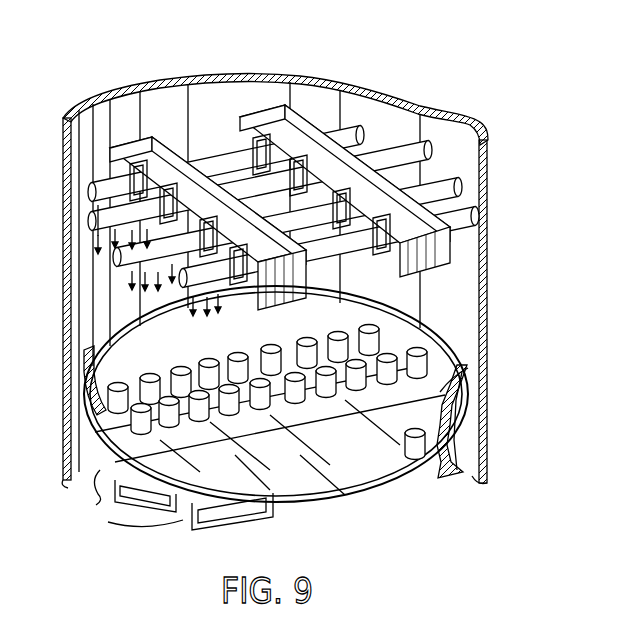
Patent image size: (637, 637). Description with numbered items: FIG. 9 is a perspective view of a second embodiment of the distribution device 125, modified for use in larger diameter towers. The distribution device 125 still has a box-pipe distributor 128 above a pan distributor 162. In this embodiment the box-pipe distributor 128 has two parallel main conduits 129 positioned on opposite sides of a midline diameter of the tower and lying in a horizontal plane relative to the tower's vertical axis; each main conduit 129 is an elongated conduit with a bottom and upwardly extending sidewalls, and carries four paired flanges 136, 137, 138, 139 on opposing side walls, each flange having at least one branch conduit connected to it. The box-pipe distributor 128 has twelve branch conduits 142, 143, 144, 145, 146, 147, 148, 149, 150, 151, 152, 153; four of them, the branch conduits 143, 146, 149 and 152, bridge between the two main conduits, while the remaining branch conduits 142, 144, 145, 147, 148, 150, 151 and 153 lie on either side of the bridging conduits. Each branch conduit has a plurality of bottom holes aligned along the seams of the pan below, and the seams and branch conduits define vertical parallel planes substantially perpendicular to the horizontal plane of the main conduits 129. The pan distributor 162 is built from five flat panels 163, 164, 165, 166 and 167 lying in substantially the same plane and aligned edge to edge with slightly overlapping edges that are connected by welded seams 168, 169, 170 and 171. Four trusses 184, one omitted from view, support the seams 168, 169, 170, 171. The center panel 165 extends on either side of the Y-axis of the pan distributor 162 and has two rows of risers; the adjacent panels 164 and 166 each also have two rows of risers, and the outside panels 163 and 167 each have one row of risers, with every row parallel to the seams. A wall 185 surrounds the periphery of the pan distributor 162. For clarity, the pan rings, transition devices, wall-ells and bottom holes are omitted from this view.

The distribution device 125 is at (339, 281).
The box-pipe distributor 128 is at (563, 342).
The main conduit 129 is at (275, 175).
The paired flange 136 is at (128, 158).
The paired flange 137 is at (163, 190).
The paired flange 138 is at (203, 219).
The paired flange 139 is at (241, 245).
The branch conduit 142 is at (88, 190).
The branch conduit 143 is at (197, 155).
The branch conduit 144 is at (362, 140).
The branch conduit 145 is at (90, 222).
The branch conduit 146 is at (204, 160).
The branch conduit 147 is at (428, 146).
The branch conduit 148 is at (132, 286).
The branch conduit 149 is at (333, 248).
The branch conduit 150 is at (463, 188).
The branch conduit 151 is at (170, 313).
The branch conduit 152 is at (362, 256).
The branch conduit 153 is at (478, 223).
The pan distributor 162 is at (290, 423).
The flat panel 163 is at (218, 366).
The flat panel 164 is at (105, 417).
The center panel 165 is at (168, 462).
The flat panel 166 is at (216, 479).
The flat panel 167 is at (287, 492).
The welded seam 168 is at (292, 345).
The welded seam 169 is at (280, 394).
The welded seam 170 is at (470, 374).
The welded seam 171 is at (378, 448).
The truss 184 is at (121, 500).
The wall 185 is at (466, 423).